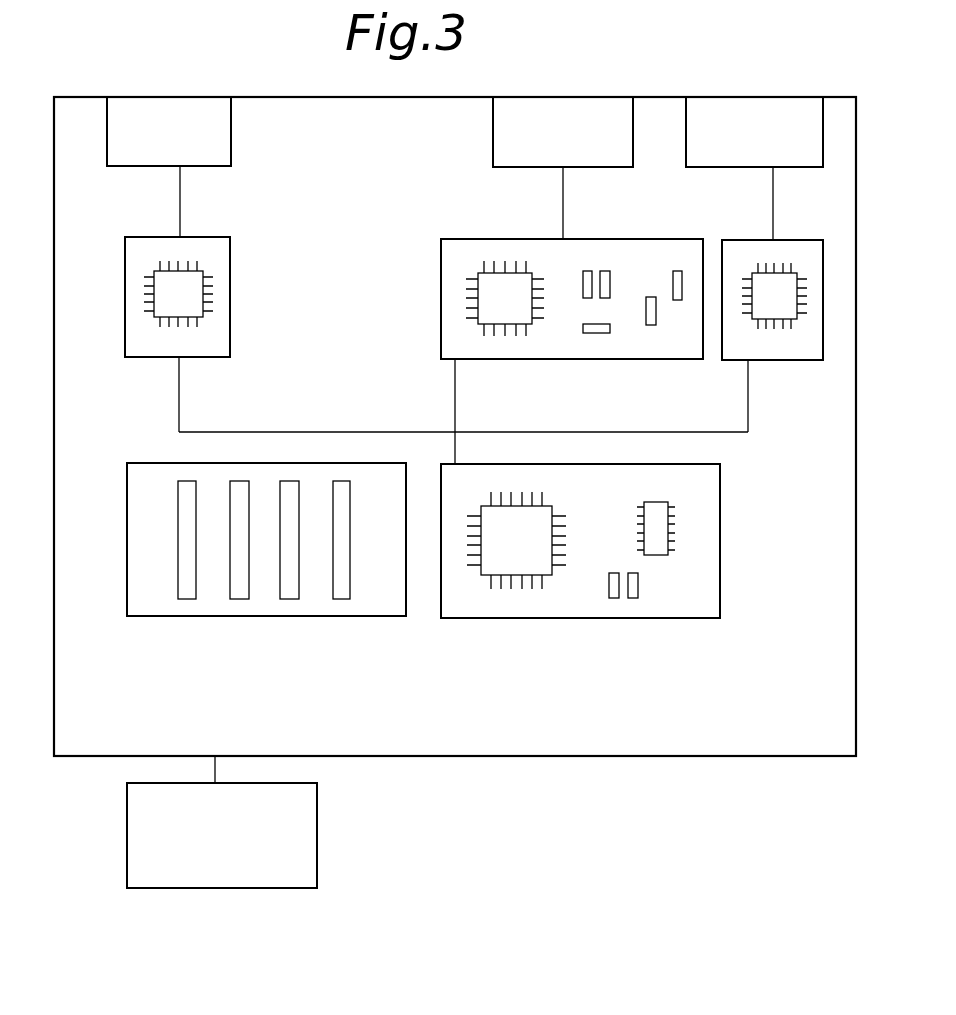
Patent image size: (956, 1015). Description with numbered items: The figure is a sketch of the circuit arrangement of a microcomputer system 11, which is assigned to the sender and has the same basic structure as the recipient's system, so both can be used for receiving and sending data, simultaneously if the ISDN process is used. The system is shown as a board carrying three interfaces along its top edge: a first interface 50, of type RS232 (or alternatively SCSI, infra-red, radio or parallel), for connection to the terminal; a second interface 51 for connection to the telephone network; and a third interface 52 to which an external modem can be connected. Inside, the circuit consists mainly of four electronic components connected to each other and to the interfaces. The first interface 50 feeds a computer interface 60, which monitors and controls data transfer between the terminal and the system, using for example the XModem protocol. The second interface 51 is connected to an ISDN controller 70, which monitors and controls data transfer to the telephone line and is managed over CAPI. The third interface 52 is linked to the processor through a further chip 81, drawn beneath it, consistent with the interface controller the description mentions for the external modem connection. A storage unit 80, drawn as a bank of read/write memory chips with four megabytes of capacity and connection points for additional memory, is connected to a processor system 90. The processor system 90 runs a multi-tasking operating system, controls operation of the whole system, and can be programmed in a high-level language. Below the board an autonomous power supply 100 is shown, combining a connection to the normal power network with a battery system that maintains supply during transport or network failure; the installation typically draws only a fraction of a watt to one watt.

The microcomputer system 11 is at (712, 756).
The first interface 50 is at (169, 167).
The second interface 51 is at (563, 168).
The third interface 52 is at (754, 168).
The computer interface 60 is at (190, 359).
The ISDN controller 70 is at (574, 359).
The storage unit 80 is at (224, 618).
The controller chip 81 is at (799, 361).
The processor system 90 is at (546, 621).
The autonomous power supply 100 is at (222, 822).